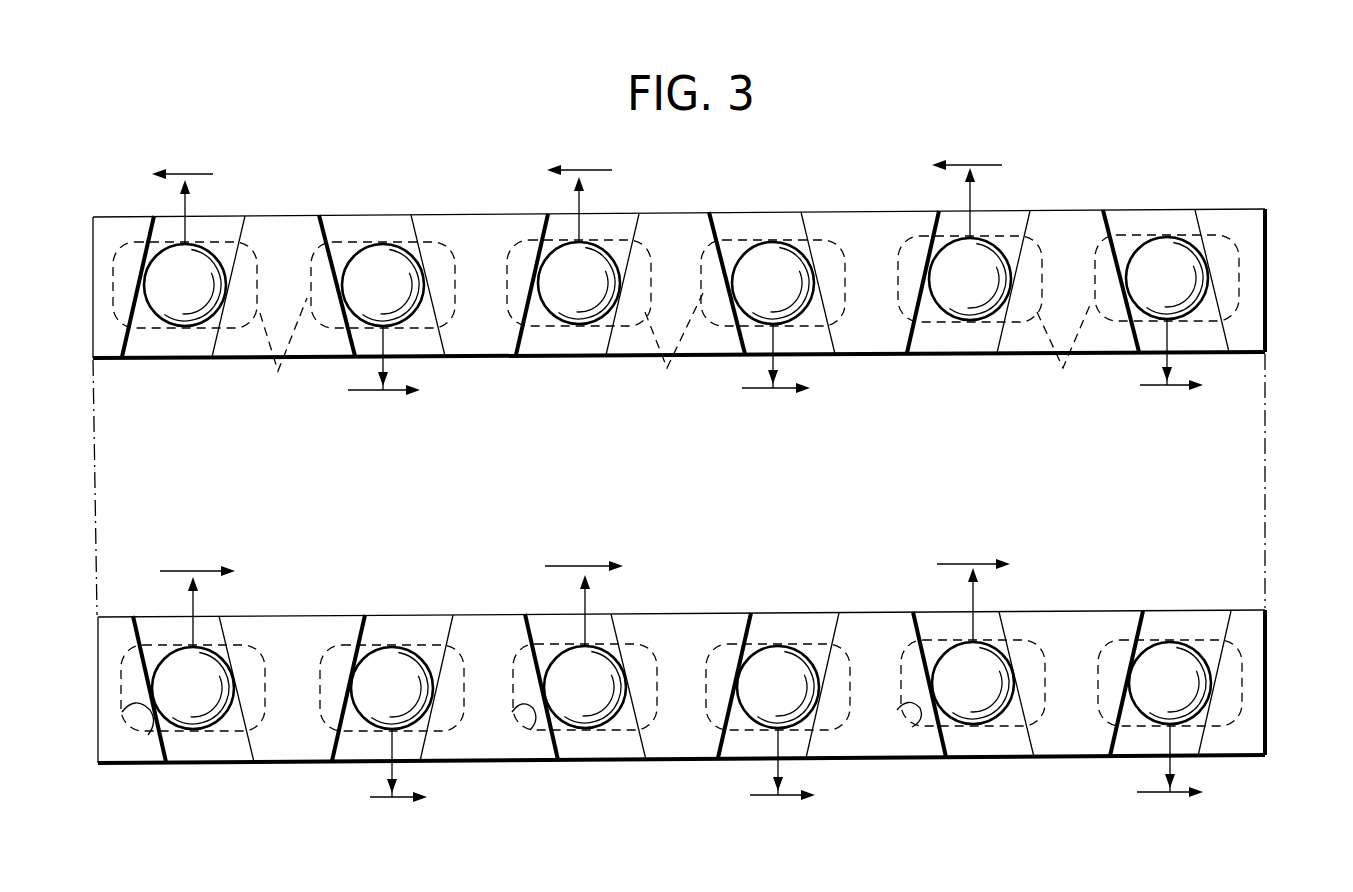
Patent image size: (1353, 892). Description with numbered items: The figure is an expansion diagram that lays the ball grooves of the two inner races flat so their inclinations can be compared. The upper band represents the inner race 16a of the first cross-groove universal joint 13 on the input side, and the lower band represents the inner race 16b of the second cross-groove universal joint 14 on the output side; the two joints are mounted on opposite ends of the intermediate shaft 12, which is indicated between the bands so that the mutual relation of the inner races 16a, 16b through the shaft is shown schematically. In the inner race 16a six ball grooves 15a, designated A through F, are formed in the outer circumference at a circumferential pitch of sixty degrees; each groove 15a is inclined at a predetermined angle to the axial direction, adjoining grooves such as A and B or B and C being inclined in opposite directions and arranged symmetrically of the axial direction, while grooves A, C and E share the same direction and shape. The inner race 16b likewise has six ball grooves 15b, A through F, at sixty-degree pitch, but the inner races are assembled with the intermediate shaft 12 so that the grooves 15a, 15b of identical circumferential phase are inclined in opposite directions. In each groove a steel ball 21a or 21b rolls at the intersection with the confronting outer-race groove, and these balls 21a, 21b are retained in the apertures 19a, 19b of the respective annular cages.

The intermediate shaft 12 is at (1232, 503).
The first cross-groove universal joint 13 is at (1270, 323).
The second cross-groove universal joint 14 is at (1272, 732).
The ball grooves of the inner race of the first joint 15a is at (238, 238).
The ball grooves of the inner race of the second joint 15b is at (247, 747).
The inner race of the first joint 16a is at (1235, 220).
The inner race of the second joint 16b is at (1243, 738).
The apertures of the cage of the first joint 19a is at (676, 321).
The apertures of the cage of the second joint 19b is at (148, 735).
The balls of the first joint 21a is at (373, 250).
The balls of the second joint 21b is at (192, 712).